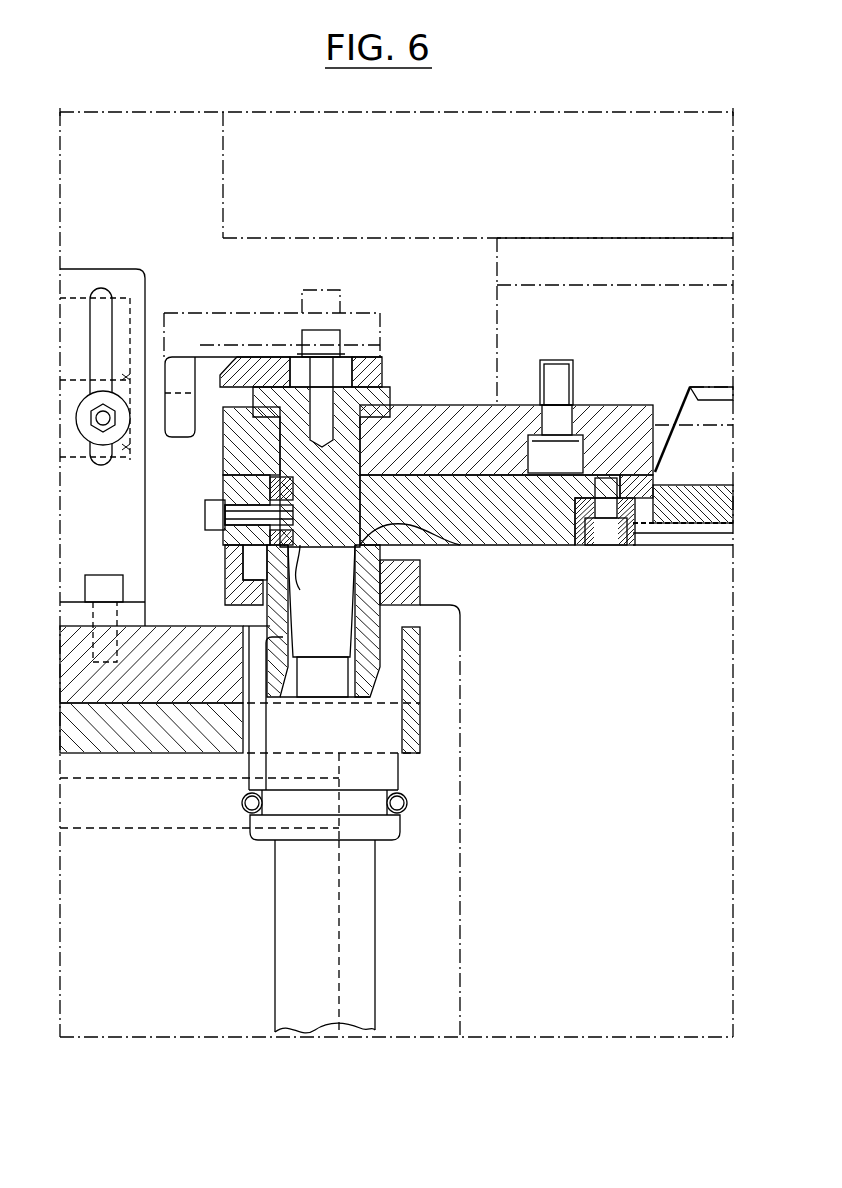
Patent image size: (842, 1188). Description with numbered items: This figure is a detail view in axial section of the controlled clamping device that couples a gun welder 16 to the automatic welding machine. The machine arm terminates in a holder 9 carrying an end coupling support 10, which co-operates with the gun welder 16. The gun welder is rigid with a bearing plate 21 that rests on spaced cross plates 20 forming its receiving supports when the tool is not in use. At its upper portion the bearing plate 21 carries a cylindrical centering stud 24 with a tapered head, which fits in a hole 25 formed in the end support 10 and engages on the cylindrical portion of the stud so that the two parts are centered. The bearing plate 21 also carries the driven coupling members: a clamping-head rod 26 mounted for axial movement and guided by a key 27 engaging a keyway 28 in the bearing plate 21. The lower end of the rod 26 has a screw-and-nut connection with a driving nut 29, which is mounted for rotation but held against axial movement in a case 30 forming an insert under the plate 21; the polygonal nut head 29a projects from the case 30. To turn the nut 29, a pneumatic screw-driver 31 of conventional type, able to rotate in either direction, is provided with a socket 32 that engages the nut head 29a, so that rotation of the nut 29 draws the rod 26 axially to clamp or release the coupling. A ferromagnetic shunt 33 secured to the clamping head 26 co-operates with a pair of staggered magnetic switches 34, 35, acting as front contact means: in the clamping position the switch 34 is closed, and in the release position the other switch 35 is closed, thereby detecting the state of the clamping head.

The holder 9 is at (528, 242).
The end coupling support 10 is at (490, 404).
The gun welder 16 is at (482, 737).
The cross plate 20 is at (143, 690).
The bearing plate 21 is at (497, 530).
The cylindrical centering stud 24 is at (703, 403).
The hole 25 is at (660, 440).
The clamping-head rod 26 is at (350, 413).
The key 27 is at (233, 536).
The keyway 28 is at (395, 528).
The driving nut 29 is at (365, 605).
The polygonal nut head 29a is at (365, 668).
The case 30 is at (232, 597).
The pneumatic screw-driver 31 is at (275, 864).
The socket 32 is at (270, 738).
The ferromagnetic shunt 33 is at (181, 367).
The magnetic switch 34 is at (125, 452).
The magnetic switch 35 is at (119, 305).